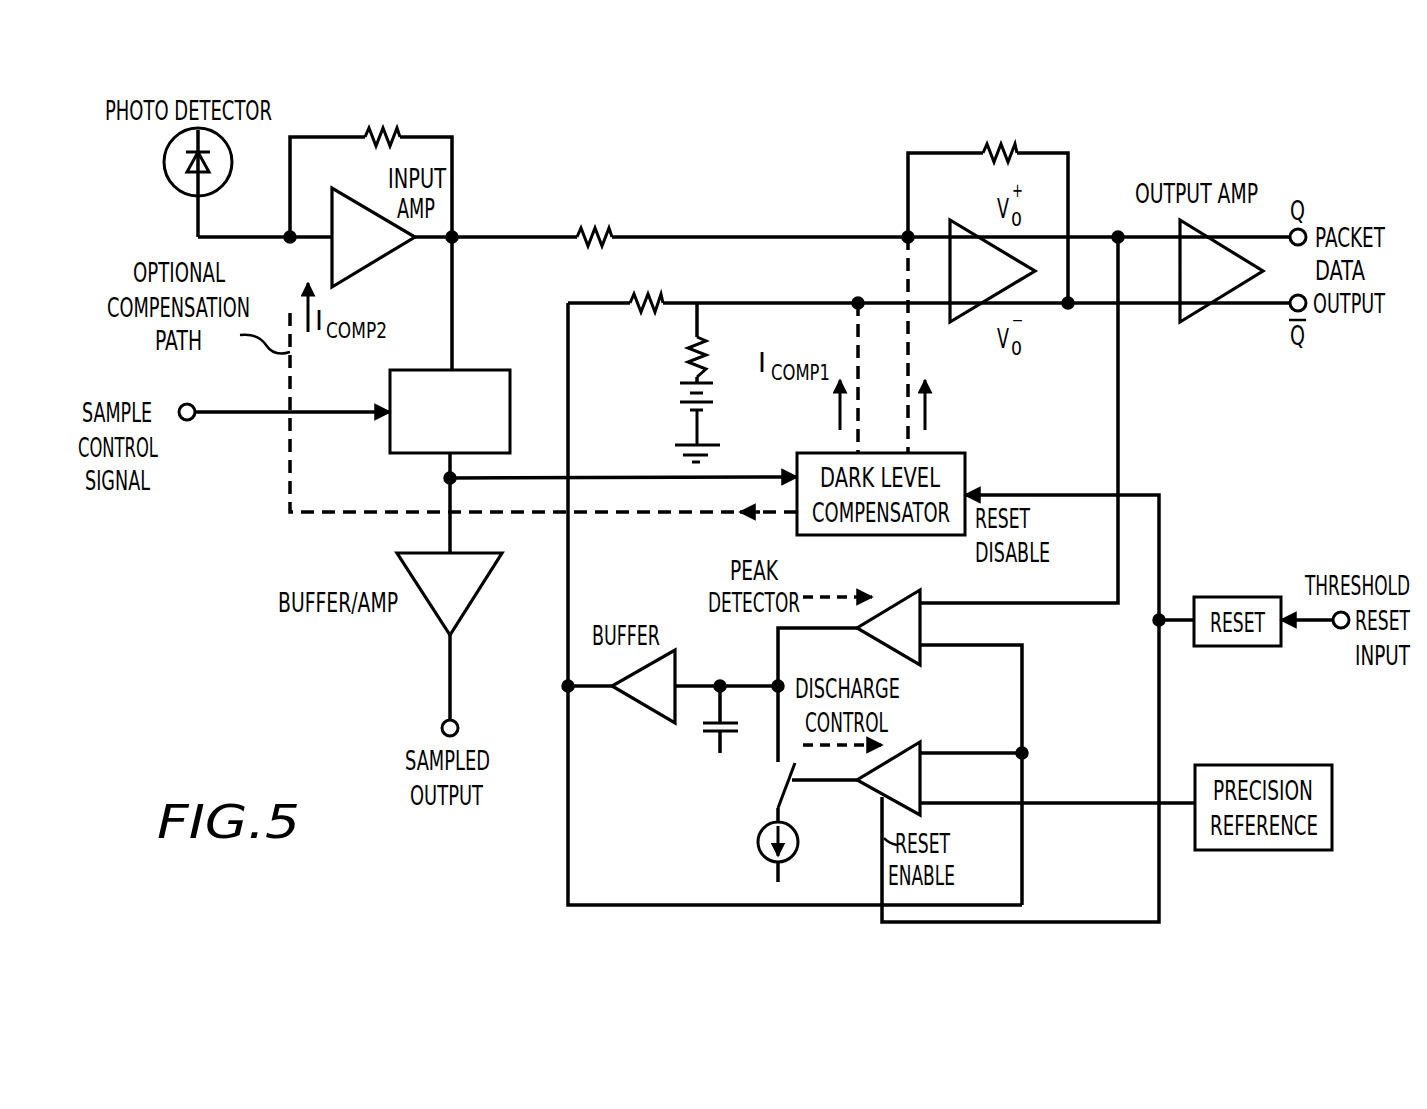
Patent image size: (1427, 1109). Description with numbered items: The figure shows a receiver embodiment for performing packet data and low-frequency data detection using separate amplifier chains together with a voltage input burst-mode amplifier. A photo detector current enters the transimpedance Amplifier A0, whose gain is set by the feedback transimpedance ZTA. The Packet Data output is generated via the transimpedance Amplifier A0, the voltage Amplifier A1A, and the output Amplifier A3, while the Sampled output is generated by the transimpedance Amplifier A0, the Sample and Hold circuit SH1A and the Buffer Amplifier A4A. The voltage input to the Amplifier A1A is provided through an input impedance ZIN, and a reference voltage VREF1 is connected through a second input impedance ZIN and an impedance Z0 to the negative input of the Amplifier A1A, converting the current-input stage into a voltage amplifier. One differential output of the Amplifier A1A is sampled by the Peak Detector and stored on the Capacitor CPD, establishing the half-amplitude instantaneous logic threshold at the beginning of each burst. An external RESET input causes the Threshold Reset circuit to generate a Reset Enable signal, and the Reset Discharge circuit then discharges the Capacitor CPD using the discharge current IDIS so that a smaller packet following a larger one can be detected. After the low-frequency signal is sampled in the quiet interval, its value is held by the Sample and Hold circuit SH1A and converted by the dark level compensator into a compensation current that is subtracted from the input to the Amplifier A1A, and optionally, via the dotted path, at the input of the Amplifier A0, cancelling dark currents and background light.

The Sample and Hold circuit SH1A is at (476, 372).
The transimpedance Amplifier A0 is at (373, 237).
The voltage Amplifier A1A is at (992, 271).
The output Amplifier A3 is at (1221, 271).
The Buffer Amplifier A4A is at (449, 594).
The transimpedance feedback element ZTA is at (371, 228).
The input impedance ZIN is at (641, 281).
The output impedance Z0 is at (646, 283).
The reference voltage VREF1 is at (690, 408).
The Capacitor CPD is at (705, 733).
The discharge current IDIS is at (753, 845).